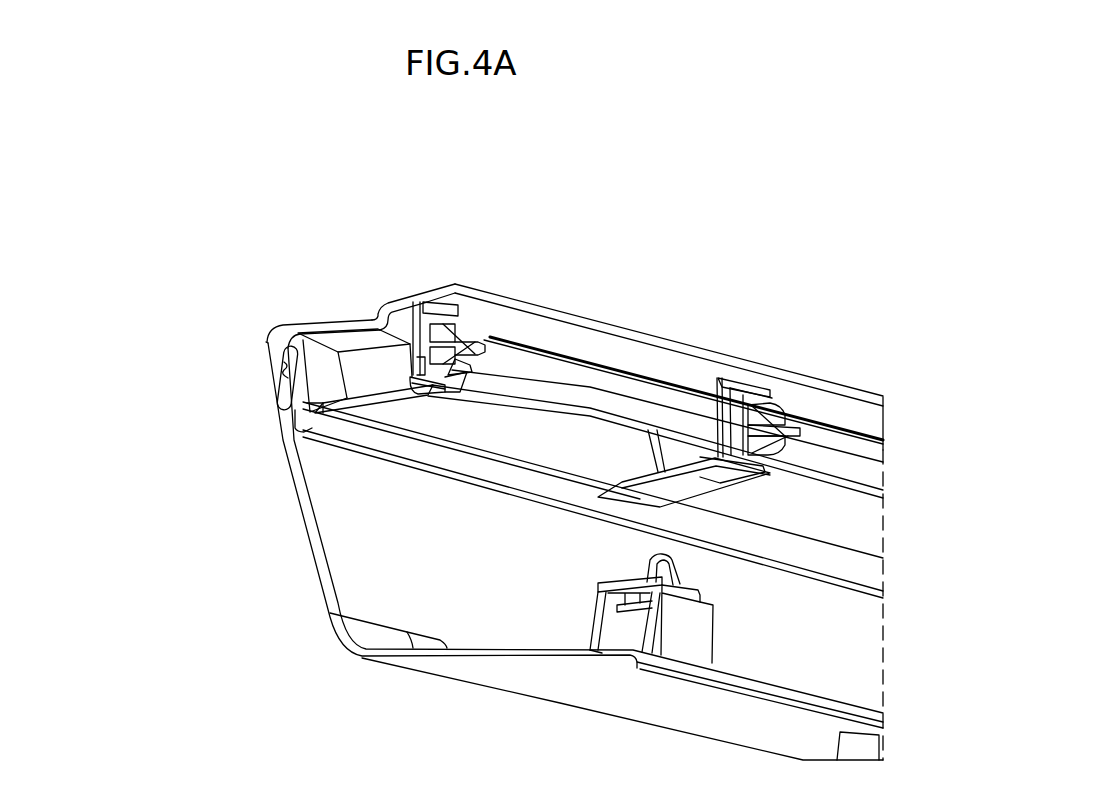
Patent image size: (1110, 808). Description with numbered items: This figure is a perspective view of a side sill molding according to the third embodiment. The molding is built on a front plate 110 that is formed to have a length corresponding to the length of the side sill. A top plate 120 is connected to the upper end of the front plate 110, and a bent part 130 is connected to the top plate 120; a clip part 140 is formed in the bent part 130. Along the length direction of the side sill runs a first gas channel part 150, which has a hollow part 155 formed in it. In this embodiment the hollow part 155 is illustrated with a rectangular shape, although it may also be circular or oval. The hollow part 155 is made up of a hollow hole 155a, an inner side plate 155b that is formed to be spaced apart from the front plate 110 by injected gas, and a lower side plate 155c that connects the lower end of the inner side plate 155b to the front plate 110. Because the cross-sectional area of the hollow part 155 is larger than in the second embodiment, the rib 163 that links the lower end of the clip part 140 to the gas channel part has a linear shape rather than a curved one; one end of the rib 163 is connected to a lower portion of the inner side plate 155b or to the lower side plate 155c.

The front plate 110 is at (307, 548).
The top plate 120 is at (348, 323).
The bent part 130 is at (386, 302).
The clip part 140 is at (448, 347).
The first gas channel part 150 is at (262, 333).
The hollow part 155 is at (225, 402).
The hollow hole 155a is at (281, 372).
The inner side plate 155b is at (320, 380).
The lower side plate 155c is at (320, 421).
The rib 163 is at (362, 408).